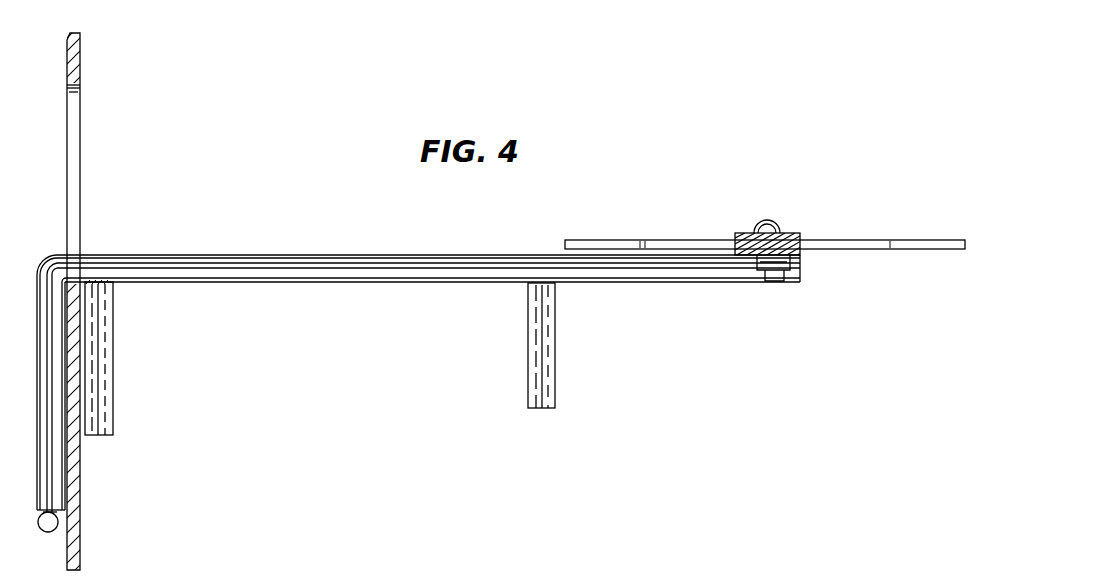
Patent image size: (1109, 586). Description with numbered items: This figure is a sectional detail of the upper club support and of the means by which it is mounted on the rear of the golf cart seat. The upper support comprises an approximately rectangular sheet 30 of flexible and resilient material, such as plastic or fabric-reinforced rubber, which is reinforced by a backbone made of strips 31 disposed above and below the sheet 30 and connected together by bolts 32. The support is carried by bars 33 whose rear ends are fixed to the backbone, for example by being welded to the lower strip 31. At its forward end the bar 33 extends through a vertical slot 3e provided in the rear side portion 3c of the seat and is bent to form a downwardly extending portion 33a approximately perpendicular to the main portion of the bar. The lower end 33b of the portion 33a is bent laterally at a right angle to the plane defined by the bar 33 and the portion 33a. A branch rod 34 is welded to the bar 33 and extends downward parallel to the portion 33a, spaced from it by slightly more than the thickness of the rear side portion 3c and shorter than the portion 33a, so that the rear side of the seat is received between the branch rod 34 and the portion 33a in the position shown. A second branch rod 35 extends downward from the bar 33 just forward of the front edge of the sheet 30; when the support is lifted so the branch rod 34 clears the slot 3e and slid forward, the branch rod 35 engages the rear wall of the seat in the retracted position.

The rear side portion 3c is at (76, 152).
The vertical slots 3e is at (80, 65).
The sheet 30 is at (858, 215).
The strips 31 is at (742, 235).
The bolts 32 is at (790, 194).
The bars 33 is at (323, 283).
The downwardly extending portions 33a is at (54, 455).
The lower ends 33b is at (58, 526).
The branch rod 34 is at (110, 383).
The second branch rod 35 is at (528, 329).